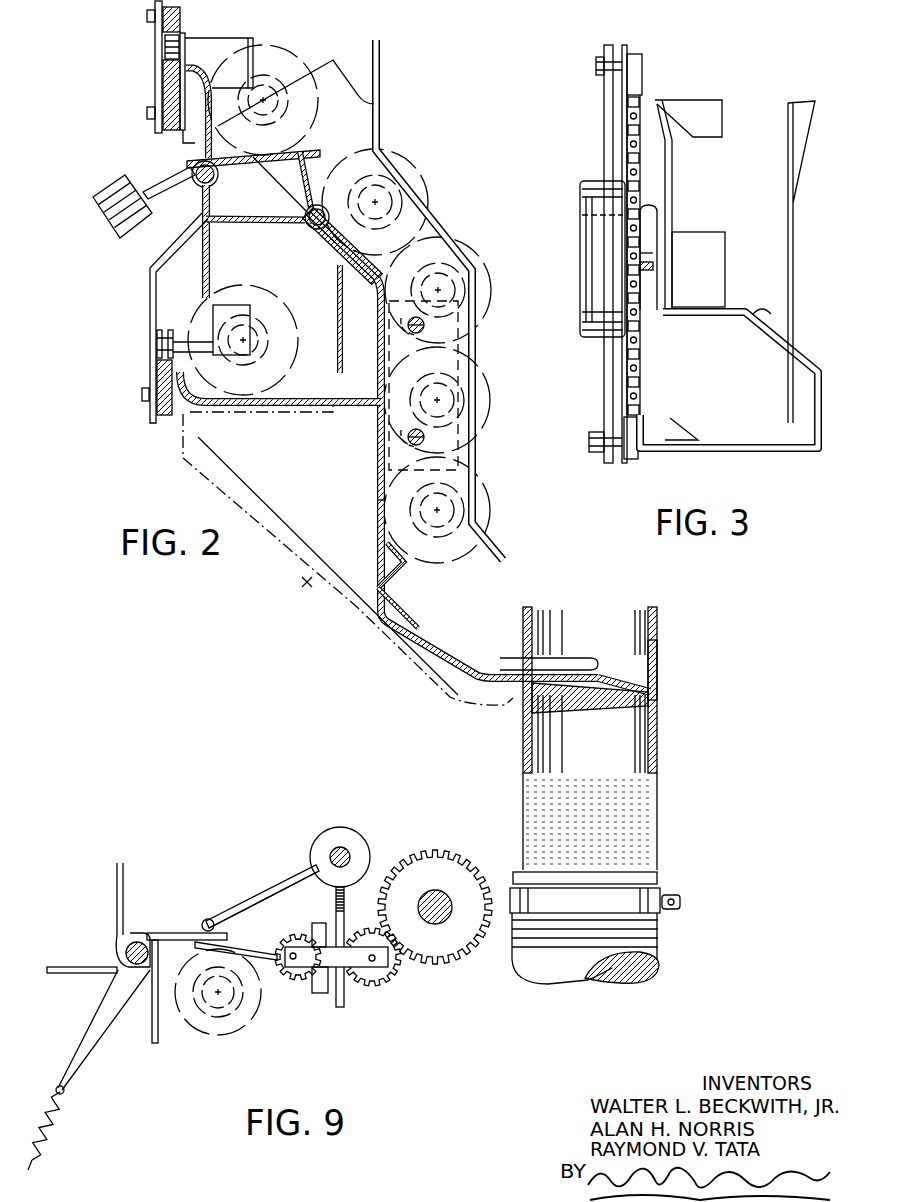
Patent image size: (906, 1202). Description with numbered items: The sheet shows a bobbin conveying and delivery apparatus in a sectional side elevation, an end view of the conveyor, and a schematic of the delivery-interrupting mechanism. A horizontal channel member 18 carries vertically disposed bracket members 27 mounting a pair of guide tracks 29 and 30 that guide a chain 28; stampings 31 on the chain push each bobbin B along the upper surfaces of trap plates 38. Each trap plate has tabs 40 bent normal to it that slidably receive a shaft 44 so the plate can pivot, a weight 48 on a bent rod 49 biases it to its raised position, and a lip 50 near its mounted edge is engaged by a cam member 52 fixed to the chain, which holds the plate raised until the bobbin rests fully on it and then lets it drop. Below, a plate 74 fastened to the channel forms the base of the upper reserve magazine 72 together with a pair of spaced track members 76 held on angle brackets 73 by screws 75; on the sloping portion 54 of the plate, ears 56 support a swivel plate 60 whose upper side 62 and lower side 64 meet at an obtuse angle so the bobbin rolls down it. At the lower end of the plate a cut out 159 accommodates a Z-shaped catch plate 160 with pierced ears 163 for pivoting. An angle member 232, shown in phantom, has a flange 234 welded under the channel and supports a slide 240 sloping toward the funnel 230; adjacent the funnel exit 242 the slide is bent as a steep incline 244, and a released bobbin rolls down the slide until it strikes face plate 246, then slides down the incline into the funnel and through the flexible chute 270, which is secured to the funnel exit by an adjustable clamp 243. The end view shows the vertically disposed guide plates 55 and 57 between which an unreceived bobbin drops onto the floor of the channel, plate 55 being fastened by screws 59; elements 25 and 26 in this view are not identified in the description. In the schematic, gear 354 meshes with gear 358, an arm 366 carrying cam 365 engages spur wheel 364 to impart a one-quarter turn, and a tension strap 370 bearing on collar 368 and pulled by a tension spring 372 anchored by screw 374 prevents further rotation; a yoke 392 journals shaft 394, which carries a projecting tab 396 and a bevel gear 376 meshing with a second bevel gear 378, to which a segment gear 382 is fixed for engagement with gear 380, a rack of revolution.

In FIG. 2, the channel member 18 is at (360, 408).
In FIG. 3, the channel member 18 is at (757, 452).
In FIG. 3, the spacer 25 is at (643, 265).
In FIG. 3, the block 26 is at (747, 207).
In FIG. 2, the bracket members 27 is at (150, 305).
In FIG. 2, the chain 28 is at (167, 49).
In FIG. 3, the chain 28 is at (629, 117).
In FIG. 2, the guide track 29 is at (165, 85).
In FIG. 2, the guide track 30 is at (160, 380).
In FIG. 2, the stamping 31 is at (237, 50).
In FIG. 2, the trap plate 38 is at (303, 149).
In FIG. 2, the tabs 40 is at (228, 172).
In FIG. 2, the shaft 44 is at (198, 186).
In FIG. 2, the weight 48 is at (95, 222).
In FIG. 2, the bent rod 49 is at (145, 182).
In FIG. 2, the lip 50 is at (184, 132).
In FIG. 2, the cam member 52 is at (188, 143).
In FIG. 2, the sloping portion 54 is at (350, 252).
In FIG. 3, the guide plate 55 is at (792, 263).
In FIG. 2, the ears 56 is at (307, 193).
In FIG. 3, the guide plate 57 is at (673, 187).
In FIG. 3, the screws 59 is at (768, 310).
In FIG. 2, the swivel plate 60 is at (312, 226).
In FIG. 2, the upper side 62 is at (315, 200).
In FIG. 2, the lower side 64 is at (338, 272).
In FIG. 2, the upper reserve magazine 72 is at (482, 455).
In FIG. 2, the angle brackets 73 is at (462, 362).
In FIG. 2, the plate 74 is at (389, 470).
In FIG. 2, the screws 75 is at (428, 325).
In FIG. 2, the track members 76 is at (381, 128).
In FIG. 2, the cut out 159 is at (379, 508).
In FIG. 2, the catch plate 160 is at (386, 555).
In FIG. 2, the ears 163 is at (376, 590).
In FIG. 2, the funnel 230 is at (668, 838).
In FIG. 2, the angle member 232 is at (308, 585).
In FIG. 2, the flange 234 is at (252, 414).
In FIG. 2, the slide 240 is at (507, 668).
In FIG. 2, the funnel exit 242 is at (627, 617).
In FIG. 2, the adjustable clamp 243 is at (650, 900).
In FIG. 2, the incline 244 is at (584, 708).
In FIG. 2, the face plate 246 is at (660, 667).
In FIG. 2, the chute 270 is at (650, 960).
In FIG. 9, the gear 354 is at (450, 870).
In FIG. 9, the gear 358 is at (398, 963).
In FIG. 9, the spur wheel 364 is at (125, 890).
In FIG. 9, the cam 365 is at (258, 898).
In FIG. 9, the arm 366 is at (290, 880).
In FIG. 9, the collar 368 is at (140, 935).
In FIG. 9, the tension strap 370 is at (98, 1040).
In FIG. 9, the tension spring 372 is at (53, 1127).
In FIG. 9, the screw 374 is at (40, 1168).
In FIG. 9, the bevel gear 376 is at (298, 970).
In FIG. 9, the second bevel gear 378 is at (320, 993).
In FIG. 9, the gear 380 is at (350, 847).
In FIG. 9, the segment gear 382 is at (346, 900).
In FIG. 9, the yoke 392 is at (340, 960).
In FIG. 9, the shaft 394 is at (292, 975).
In FIG. 9, the projecting tab 396 is at (233, 943).
In FIG. 2, the bobbin B is at (293, 72).
In FIG. 9, the bobbin B is at (222, 1035).